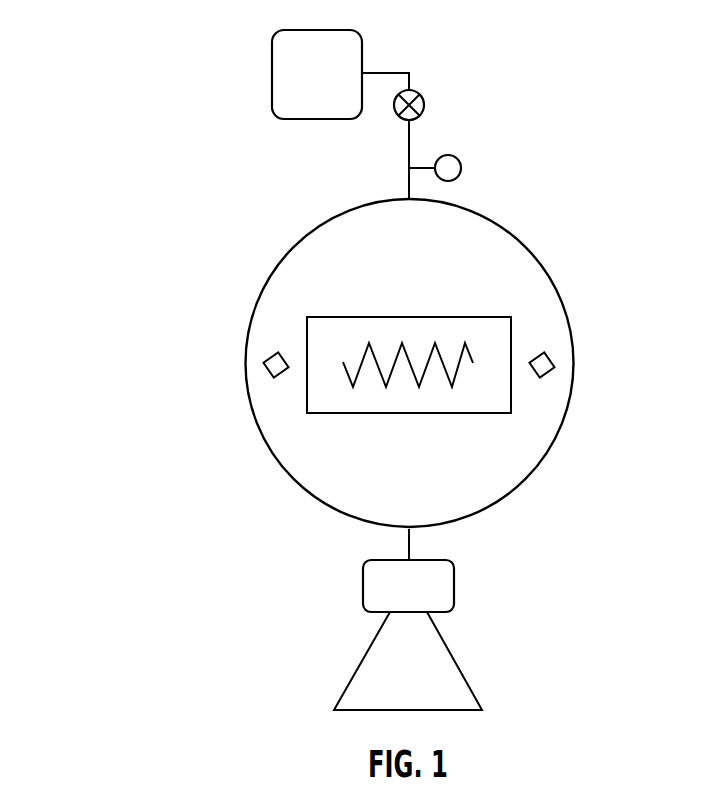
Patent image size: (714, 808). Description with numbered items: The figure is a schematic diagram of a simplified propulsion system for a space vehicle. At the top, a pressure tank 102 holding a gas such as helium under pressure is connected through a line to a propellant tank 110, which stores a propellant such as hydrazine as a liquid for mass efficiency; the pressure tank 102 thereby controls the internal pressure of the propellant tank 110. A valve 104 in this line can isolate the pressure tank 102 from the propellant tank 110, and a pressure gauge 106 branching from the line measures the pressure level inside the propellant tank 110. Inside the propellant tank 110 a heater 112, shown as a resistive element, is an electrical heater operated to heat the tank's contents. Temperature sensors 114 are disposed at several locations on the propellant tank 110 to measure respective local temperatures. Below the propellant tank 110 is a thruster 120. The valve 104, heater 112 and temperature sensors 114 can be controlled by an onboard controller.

The pressure tank 102 is at (318, 120).
The valve 104 is at (418, 94).
The pressure gauge 106 is at (458, 155).
The propellant tank 110 is at (512, 236).
The heater 112 is at (462, 317).
The temperature sensors 114 is at (268, 375).
The thruster 120 is at (420, 560).